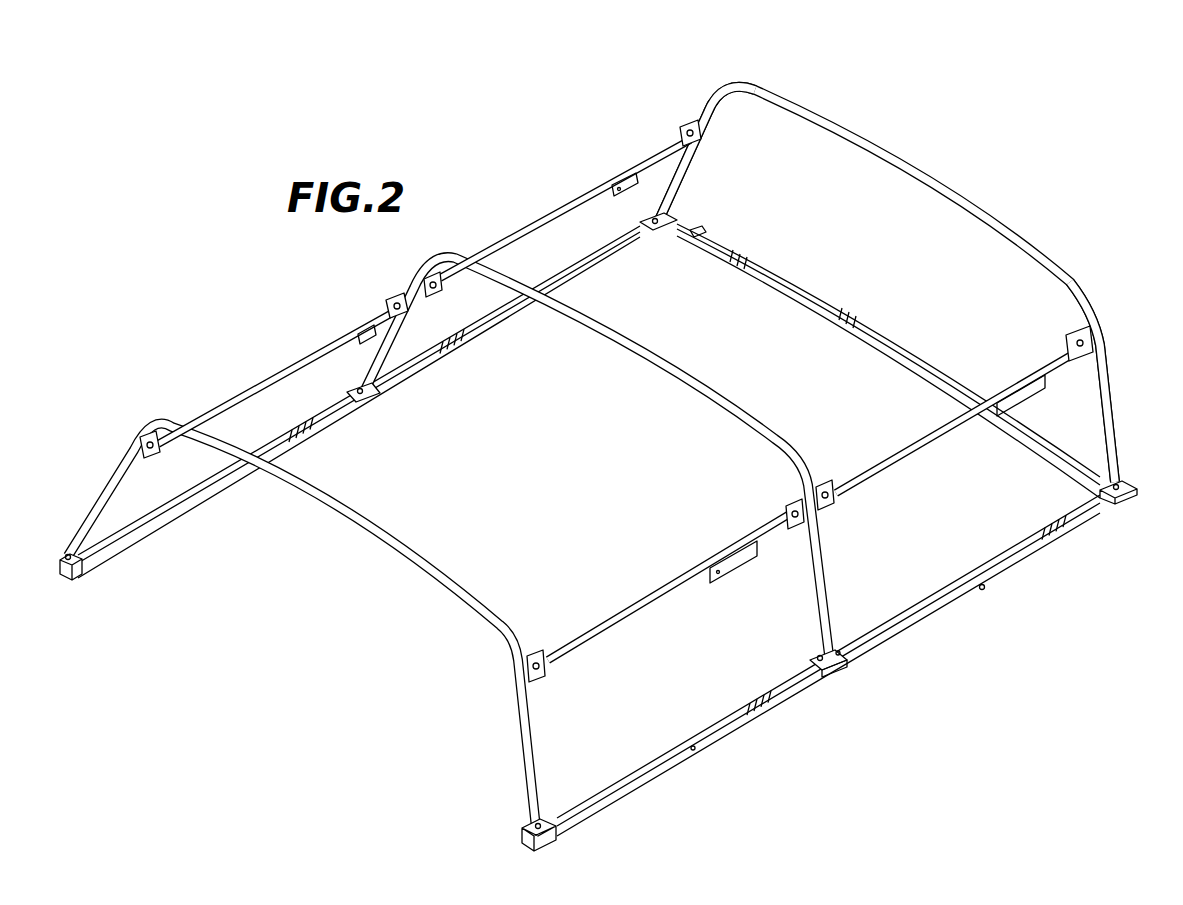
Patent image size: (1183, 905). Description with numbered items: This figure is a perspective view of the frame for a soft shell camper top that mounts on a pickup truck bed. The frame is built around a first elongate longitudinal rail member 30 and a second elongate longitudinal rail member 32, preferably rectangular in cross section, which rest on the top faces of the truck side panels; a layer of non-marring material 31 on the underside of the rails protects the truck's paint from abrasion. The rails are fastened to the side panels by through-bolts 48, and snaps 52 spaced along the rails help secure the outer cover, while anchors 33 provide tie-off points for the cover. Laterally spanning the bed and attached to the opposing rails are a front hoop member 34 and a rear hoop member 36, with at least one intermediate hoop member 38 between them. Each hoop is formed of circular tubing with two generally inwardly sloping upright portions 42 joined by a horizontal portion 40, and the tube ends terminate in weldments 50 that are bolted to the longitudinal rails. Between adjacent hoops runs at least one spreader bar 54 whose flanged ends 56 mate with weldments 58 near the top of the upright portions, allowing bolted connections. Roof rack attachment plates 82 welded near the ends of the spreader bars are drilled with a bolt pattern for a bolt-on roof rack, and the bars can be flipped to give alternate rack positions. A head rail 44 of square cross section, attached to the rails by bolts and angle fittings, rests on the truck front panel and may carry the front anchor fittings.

The first elongate longitudinal rail member 30 is at (1060, 550).
The layer of non-marring material 31 is at (652, 774).
The second elongate longitudinal rail member 32 is at (183, 514).
The anchors 33 is at (92, 566).
The front hoop member 34 is at (874, 88).
The rear hoop member 36 is at (385, 513).
The intermediate hoop member 38 is at (657, 348).
The horizontal portion 40 is at (935, 178).
The upright portions 42 is at (707, 140).
The head rail 44 is at (815, 298).
The through-bolts 48 is at (815, 653).
The weldments 50 is at (843, 661).
The snaps 52 is at (982, 589).
The spreader bar 54 is at (637, 600).
The flanged ends 56 is at (835, 506).
The weldments 58 is at (823, 486).
The roof rack attachment plates 82 is at (620, 190).